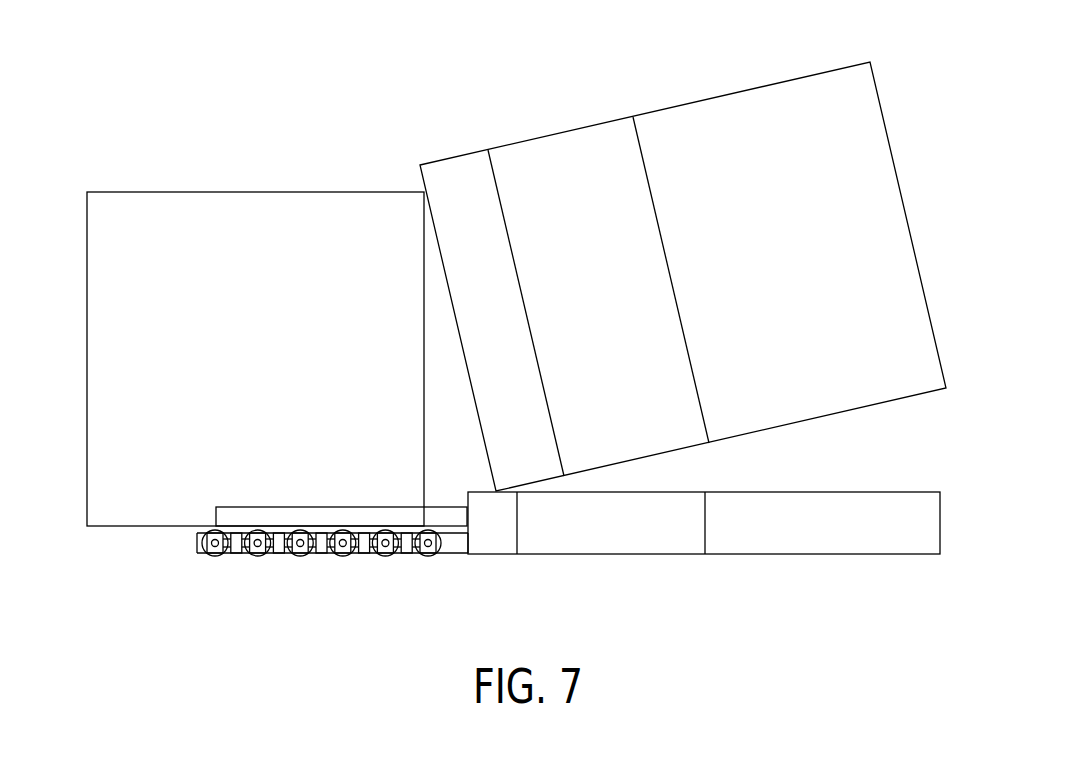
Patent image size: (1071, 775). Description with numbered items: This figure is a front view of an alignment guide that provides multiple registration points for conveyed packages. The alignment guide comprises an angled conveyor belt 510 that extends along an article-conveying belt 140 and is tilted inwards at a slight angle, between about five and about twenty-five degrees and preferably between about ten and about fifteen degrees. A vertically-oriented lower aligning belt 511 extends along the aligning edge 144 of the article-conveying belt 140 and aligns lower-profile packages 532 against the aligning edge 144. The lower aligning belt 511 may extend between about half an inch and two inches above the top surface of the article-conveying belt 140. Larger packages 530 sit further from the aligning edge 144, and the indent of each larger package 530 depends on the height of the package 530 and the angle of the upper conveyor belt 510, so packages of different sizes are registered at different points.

The larger package 530 is at (238, 225).
The angled conveyor belt 510 is at (512, 195).
The lower-profile package 532 is at (359, 512).
The vertically-oriented lower aligning belt 511 is at (498, 535).
The article-conveying belt 140 is at (228, 550).
The aligning edge 144 is at (468, 533).